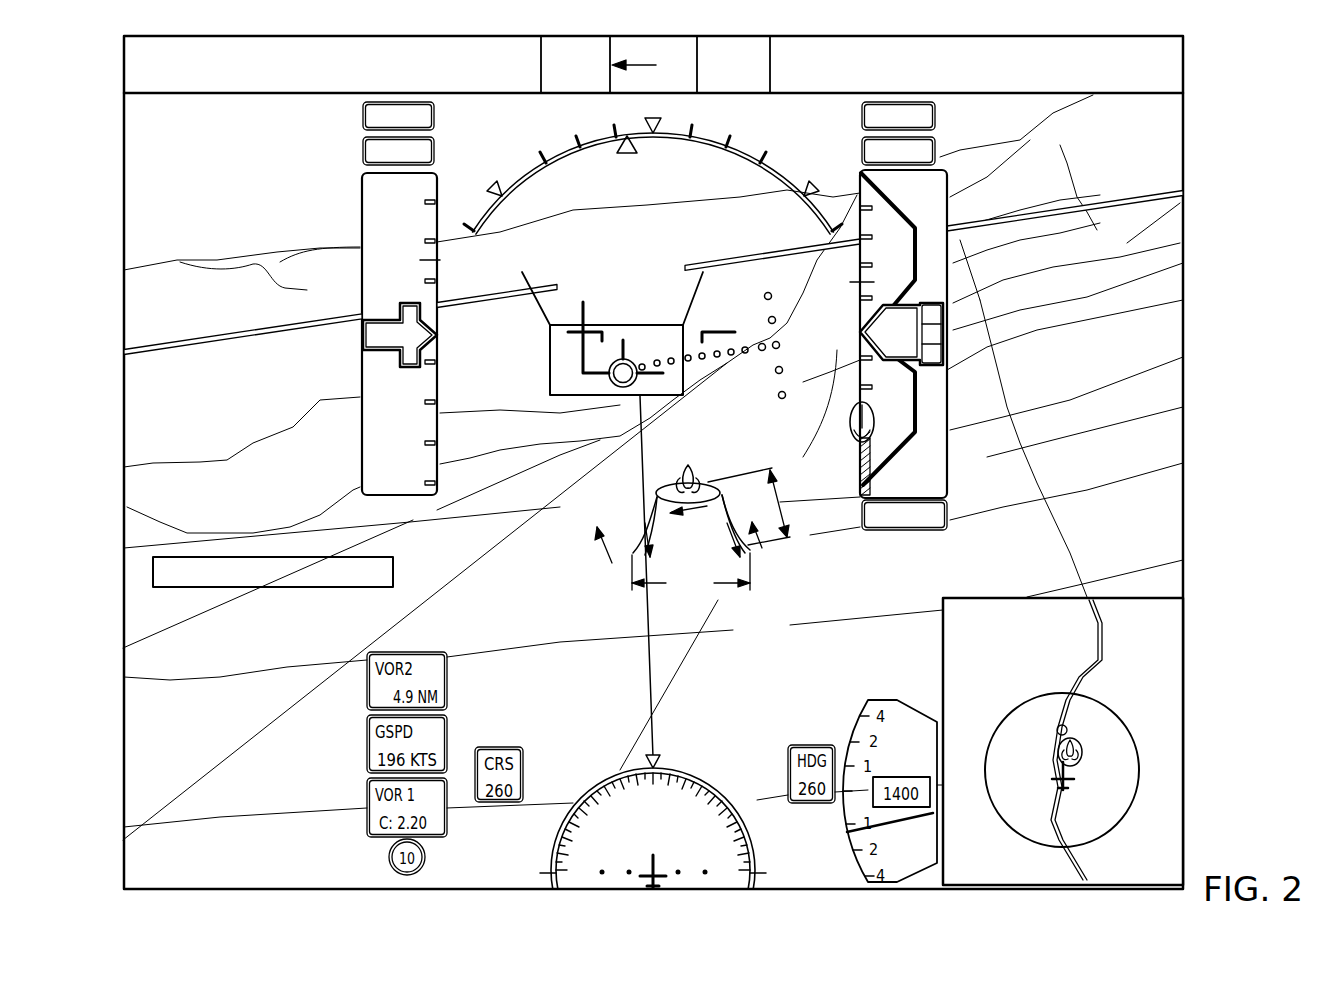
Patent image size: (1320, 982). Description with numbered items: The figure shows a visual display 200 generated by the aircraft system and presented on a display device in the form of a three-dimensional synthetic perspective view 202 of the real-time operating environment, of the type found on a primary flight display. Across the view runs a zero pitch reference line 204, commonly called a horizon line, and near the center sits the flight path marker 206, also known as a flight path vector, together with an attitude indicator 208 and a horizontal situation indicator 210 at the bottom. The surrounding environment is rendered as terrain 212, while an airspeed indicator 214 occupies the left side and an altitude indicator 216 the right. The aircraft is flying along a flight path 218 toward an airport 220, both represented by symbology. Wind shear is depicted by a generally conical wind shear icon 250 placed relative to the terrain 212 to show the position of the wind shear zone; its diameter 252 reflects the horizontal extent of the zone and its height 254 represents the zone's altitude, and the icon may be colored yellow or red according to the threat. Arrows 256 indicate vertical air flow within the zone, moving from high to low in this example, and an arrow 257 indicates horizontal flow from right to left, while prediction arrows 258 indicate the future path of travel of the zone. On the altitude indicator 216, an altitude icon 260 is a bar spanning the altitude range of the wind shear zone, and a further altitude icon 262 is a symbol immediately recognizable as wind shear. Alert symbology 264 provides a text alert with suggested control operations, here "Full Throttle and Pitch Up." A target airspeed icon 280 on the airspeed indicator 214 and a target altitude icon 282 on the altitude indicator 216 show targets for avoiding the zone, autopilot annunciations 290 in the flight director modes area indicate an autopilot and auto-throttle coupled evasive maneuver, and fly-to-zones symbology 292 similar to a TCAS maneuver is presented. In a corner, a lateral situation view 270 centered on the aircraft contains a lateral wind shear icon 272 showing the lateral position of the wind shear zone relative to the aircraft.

The visual display 200 is at (90, 124).
The three-dimensional synthetic perspective view 202 is at (152, 205).
The zero pitch reference line 204 is at (653, 467).
The flight path marker 206 is at (616, 394).
The attitude indicator 208 is at (712, 348).
The horizontal situation indicator 210 is at (563, 151).
The terrain 212 is at (175, 272).
The airspeed indicator 214 is at (418, 498).
The altitude indicator 216 is at (947, 463).
The flight path 218 is at (650, 650).
The airport 220 is at (640, 366).
The wind shear icon 250 is at (708, 482).
The diameter 252 is at (691, 574).
The height 254 is at (754, 506).
The arrows 256 is at (652, 542).
The arrow 257 is at (672, 512).
The prediction arrows 258 is at (593, 557).
The altitude icon 260 is at (860, 458).
The altitude icon 262 is at (875, 421).
The alert symbology 264 is at (393, 572).
The lateral situation view 270 is at (990, 598).
The lateral wind shear icon 272 is at (1080, 740).
The target airspeed icon 280 is at (462, 282).
The target altitude icon 282 is at (830, 300).
The autopilot annunciations 290 is at (668, 88).
The fly-to-zones symbology 292 is at (550, 388).